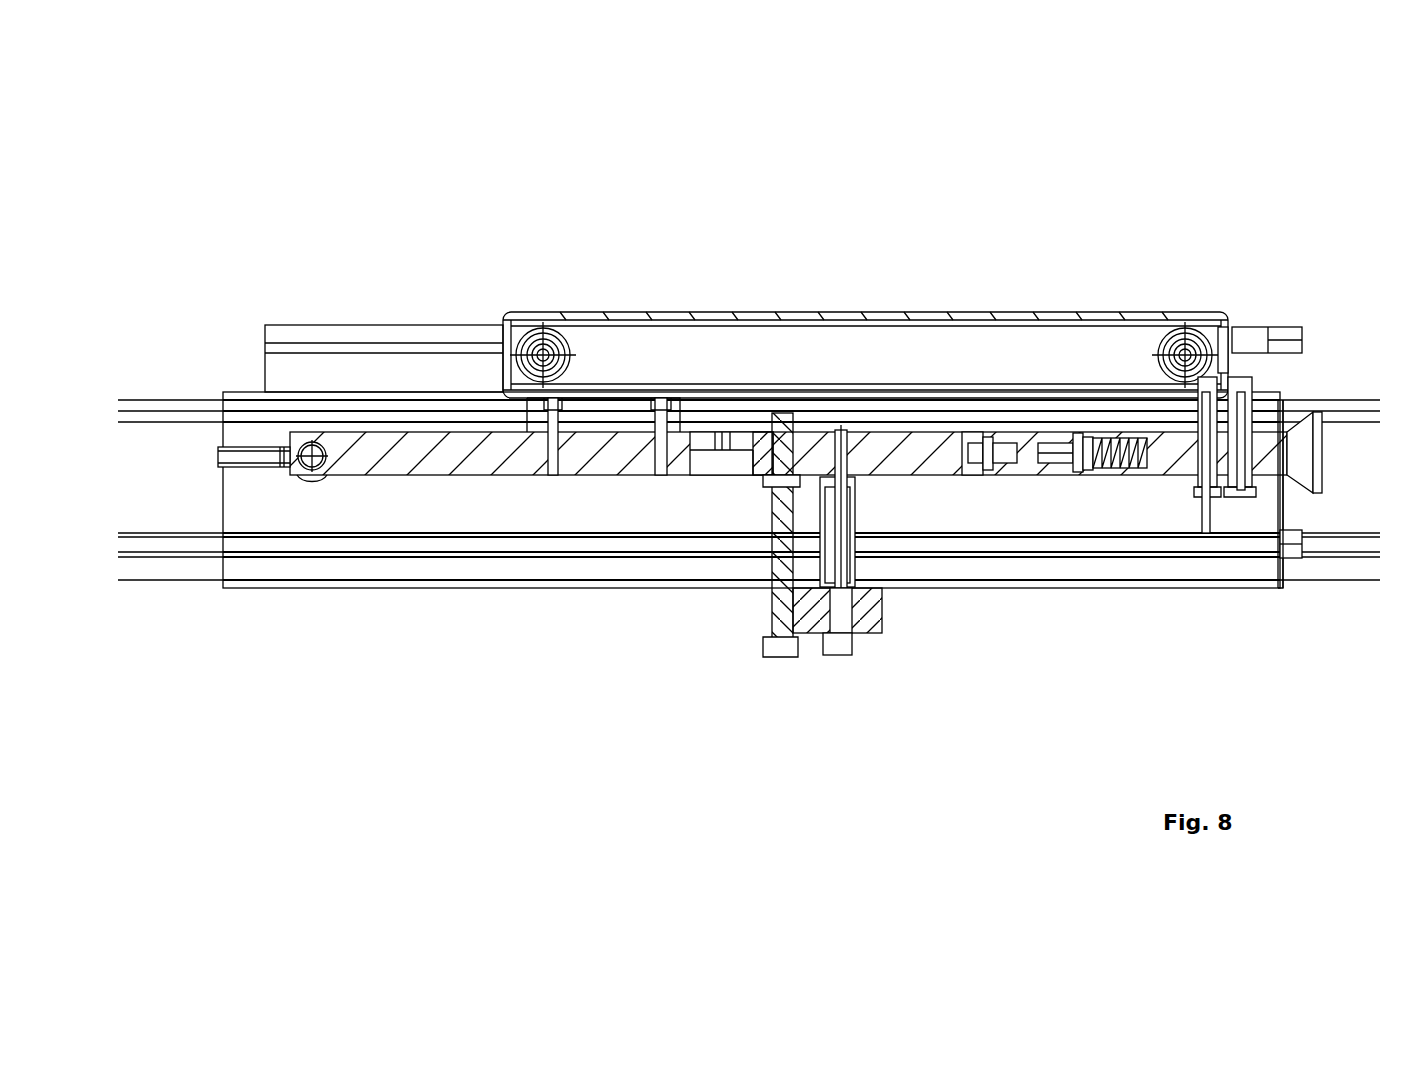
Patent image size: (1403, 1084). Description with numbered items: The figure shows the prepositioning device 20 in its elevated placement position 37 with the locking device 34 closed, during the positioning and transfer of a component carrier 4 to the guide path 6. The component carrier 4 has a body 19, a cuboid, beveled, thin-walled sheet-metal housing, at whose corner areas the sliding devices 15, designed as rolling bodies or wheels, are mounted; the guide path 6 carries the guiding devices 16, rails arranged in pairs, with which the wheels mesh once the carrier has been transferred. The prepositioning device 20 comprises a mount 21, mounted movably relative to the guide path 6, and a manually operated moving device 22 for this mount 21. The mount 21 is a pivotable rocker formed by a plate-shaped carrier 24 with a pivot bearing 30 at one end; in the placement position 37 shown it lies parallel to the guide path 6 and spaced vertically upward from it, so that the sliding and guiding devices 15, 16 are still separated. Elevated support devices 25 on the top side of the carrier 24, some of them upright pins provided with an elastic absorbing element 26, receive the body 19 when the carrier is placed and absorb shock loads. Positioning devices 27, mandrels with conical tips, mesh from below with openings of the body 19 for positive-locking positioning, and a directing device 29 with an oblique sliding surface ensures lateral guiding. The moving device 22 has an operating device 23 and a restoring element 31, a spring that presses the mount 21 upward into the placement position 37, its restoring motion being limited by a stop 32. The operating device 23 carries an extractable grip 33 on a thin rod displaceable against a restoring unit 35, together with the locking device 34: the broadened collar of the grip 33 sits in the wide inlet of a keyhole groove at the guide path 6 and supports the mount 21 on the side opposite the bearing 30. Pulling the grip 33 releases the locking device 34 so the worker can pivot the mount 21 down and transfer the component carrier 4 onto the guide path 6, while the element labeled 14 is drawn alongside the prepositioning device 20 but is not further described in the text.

The housing 4 is at (795, 312).
The lower guide rail 6 is at (150, 558).
The carriage 14 is at (485, 302).
The hinge unit 20 is at (485, 302).
The fastening screw 15 is at (557, 343).
The upper guide rail 16 is at (175, 400).
The cover plate 19 is at (915, 345).
The carriage body 21 is at (390, 485).
The slide block 22 is at (250, 480).
The end plate 23 is at (1316, 515).
The guide bar 24 is at (465, 460).
The bolt 25 is at (622, 400).
The nut 26 is at (1258, 384).
The fastening screw 27 is at (1205, 345).
The cover strip 29 is at (362, 365).
The pin 30 is at (302, 447).
The adjusting screw 31 is at (848, 522).
The guide pin 32 is at (766, 645).
The adjusting knob 33 is at (1310, 470).
The retaining plate 34 is at (1275, 450).
The spring loaded screw 35 is at (1112, 470).
The lever 37 is at (1283, 305).